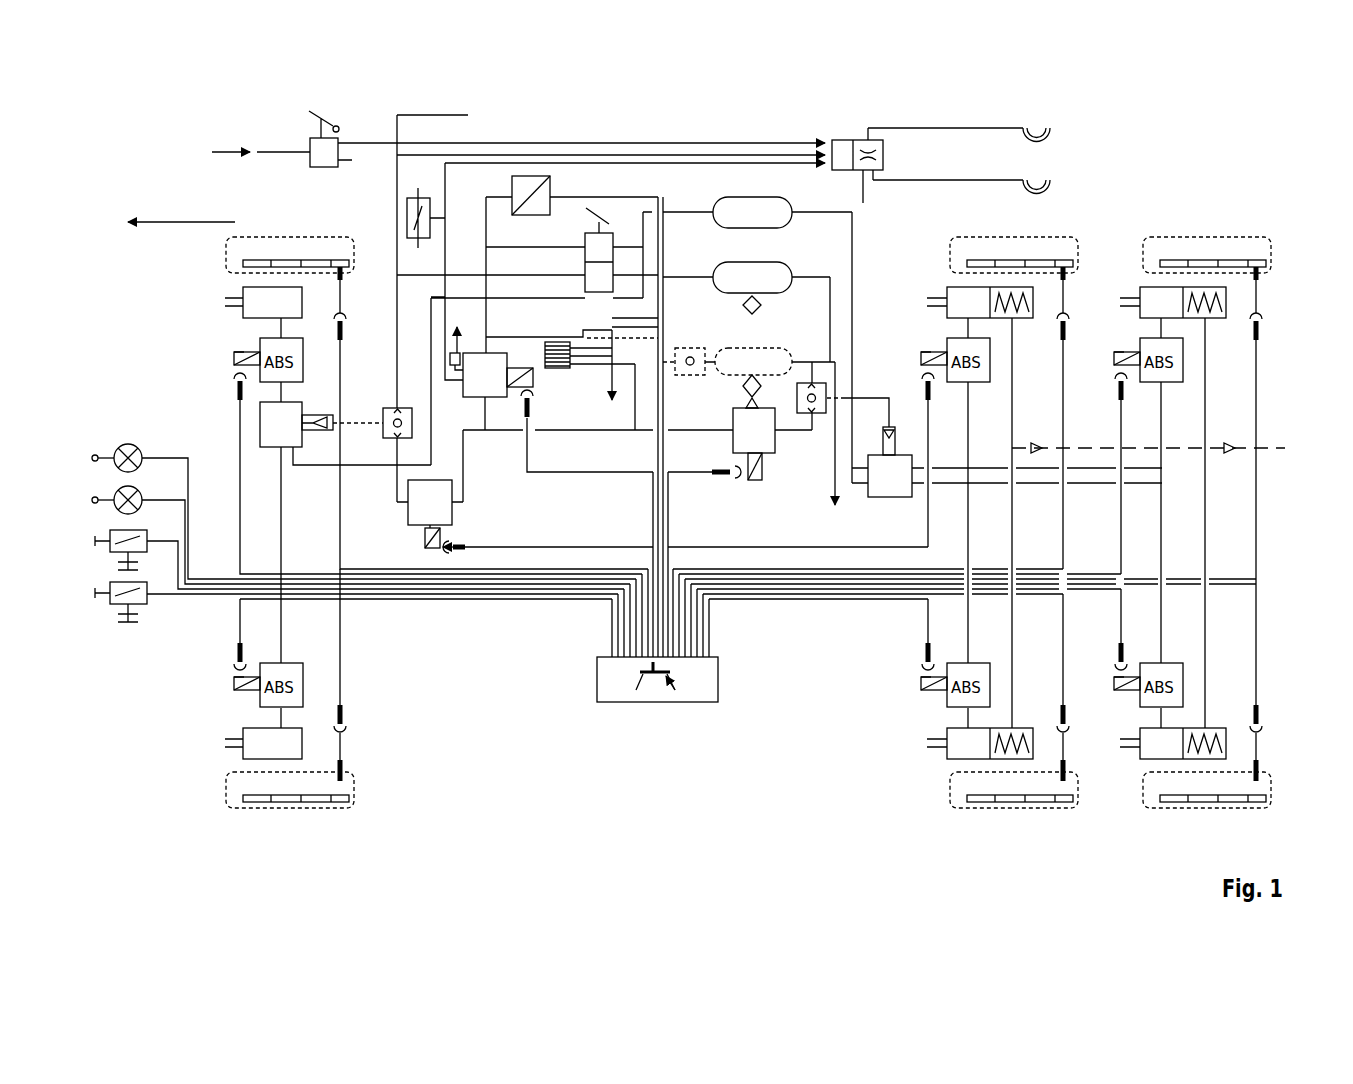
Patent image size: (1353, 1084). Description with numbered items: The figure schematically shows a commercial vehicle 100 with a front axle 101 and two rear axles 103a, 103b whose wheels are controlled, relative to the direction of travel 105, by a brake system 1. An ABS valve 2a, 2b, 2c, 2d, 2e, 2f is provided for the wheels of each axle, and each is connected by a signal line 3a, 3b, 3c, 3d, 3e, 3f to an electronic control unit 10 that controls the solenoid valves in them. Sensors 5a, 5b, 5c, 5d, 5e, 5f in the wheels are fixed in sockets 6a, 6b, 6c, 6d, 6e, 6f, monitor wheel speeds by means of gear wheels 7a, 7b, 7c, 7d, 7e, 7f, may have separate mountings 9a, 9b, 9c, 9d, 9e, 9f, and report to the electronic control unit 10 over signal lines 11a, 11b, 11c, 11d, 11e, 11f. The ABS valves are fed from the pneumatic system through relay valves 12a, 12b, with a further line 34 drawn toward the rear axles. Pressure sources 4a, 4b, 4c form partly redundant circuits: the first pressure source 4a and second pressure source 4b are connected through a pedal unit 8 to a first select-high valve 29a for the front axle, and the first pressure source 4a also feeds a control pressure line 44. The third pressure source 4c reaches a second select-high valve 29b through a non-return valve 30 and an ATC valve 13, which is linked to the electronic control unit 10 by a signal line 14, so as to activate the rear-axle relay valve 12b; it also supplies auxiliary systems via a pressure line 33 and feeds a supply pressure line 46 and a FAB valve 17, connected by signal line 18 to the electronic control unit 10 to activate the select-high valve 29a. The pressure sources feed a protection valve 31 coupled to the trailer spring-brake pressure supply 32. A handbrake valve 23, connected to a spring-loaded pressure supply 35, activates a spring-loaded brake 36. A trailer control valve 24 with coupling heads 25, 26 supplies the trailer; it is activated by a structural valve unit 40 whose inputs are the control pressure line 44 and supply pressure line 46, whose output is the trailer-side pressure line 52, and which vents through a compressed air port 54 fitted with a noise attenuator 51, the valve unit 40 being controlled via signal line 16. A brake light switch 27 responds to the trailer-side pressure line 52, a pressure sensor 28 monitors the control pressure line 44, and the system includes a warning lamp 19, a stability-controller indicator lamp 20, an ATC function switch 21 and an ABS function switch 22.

The brake system 1 is at (172, 745).
The commercial vehicle 100 is at (152, 142).
The front axle 101 is at (392, 760).
The rear axle 103a is at (952, 820).
The rear axle 103b is at (1157, 820).
The direction of travel 105 is at (170, 228).
The ABS valve 2a is at (260, 345).
The ABS valve 2b is at (290, 663).
The ABS valve 2c is at (947, 345).
The ABS valve 2d is at (947, 702).
The ABS valve 2e is at (1140, 345).
The ABS valve 2f is at (1140, 702).
The signal line 3a is at (240, 410).
The signal line 3b is at (240, 630).
The signal line 3c is at (928, 520).
The signal line 3d is at (928, 630).
The signal line 3e is at (1121, 406).
The signal line 3f is at (1121, 630).
The first pressure source 4a is at (713, 208).
The second pressure source 4b is at (713, 272).
The third pressure source 4c is at (722, 348).
The sensor 5a is at (291, 235).
The sensor 5b is at (366, 784).
The sensor 5c is at (1014, 235).
The sensor 5d is at (1018, 813).
The sensor 5e is at (1207, 235).
The sensor 5f is at (1207, 813).
The socket 6a is at (291, 235).
The socket 6b is at (366, 784).
The socket 6c is at (1014, 235).
The socket 6d is at (1018, 813).
The socket 6e is at (1207, 235).
The socket 6f is at (1207, 813).
The gear wheel 7a is at (291, 235).
The gear wheel 7b is at (366, 784).
The gear wheel 7c is at (1014, 235).
The gear wheel 7d is at (1018, 813).
The gear wheel 7e is at (1207, 235).
The gear wheel 7f is at (1207, 813).
The mounting 9a is at (322, 268).
The mounting 9b is at (305, 790).
The mounting 9c is at (1046, 268).
The mounting 9d is at (1050, 788).
The mounting 9e is at (1239, 268).
The mounting 9f is at (1243, 788).
The pedal unit 8 is at (604, 198).
The electronic control unit 10 is at (660, 702).
The signal line 11a is at (343, 548).
The signal line 11b is at (343, 642).
The signal line 11c is at (1058, 368).
The signal line 11d is at (1060, 672).
The signal line 11e is at (1252, 368).
The signal line 11f is at (1254, 672).
The relay valve 12a is at (260, 437).
The relay valve 12b is at (890, 440).
The ATC valve 13 is at (765, 455).
The signal line 14 is at (690, 475).
The signal line 16 is at (606, 475).
The FAB valve 17 is at (452, 515).
The signal line 18 is at (548, 545).
The warning lamp 19 is at (136, 442).
The indicator lamp for the stability controller 20 is at (150, 487).
The function switch 21 is at (150, 530).
The function switch 22 is at (112, 622).
The handbrake valve 23 is at (310, 142).
The trailer control valve 24 is at (884, 152).
The coupling head 25 is at (1050, 136).
The coupling head 26 is at (1050, 186).
The brake light switch 27 is at (405, 212).
The pressure sensor 28 is at (512, 195).
The select-high valve 29a is at (395, 440).
The select-high valve 29b is at (815, 415).
The non-return valve 30 is at (690, 378).
The protection valve 31 is at (531, 408).
The pressure supply 32 is at (607, 380).
The pressure line 33 is at (832, 505).
The pneumatic line 34 is at (1270, 448).
The spring-loaded pressure supply 35 is at (222, 162).
The spring-loaded brake 36 is at (468, 118).
The valve unit 40 is at (470, 336).
The control pressure line 44 is at (487, 316).
The supply pressure line 46 is at (485, 420).
The noise attenuator 51 is at (463, 375).
The trailer-side pressure line 52 is at (452, 325).
The compressed air port 54 is at (450, 356).